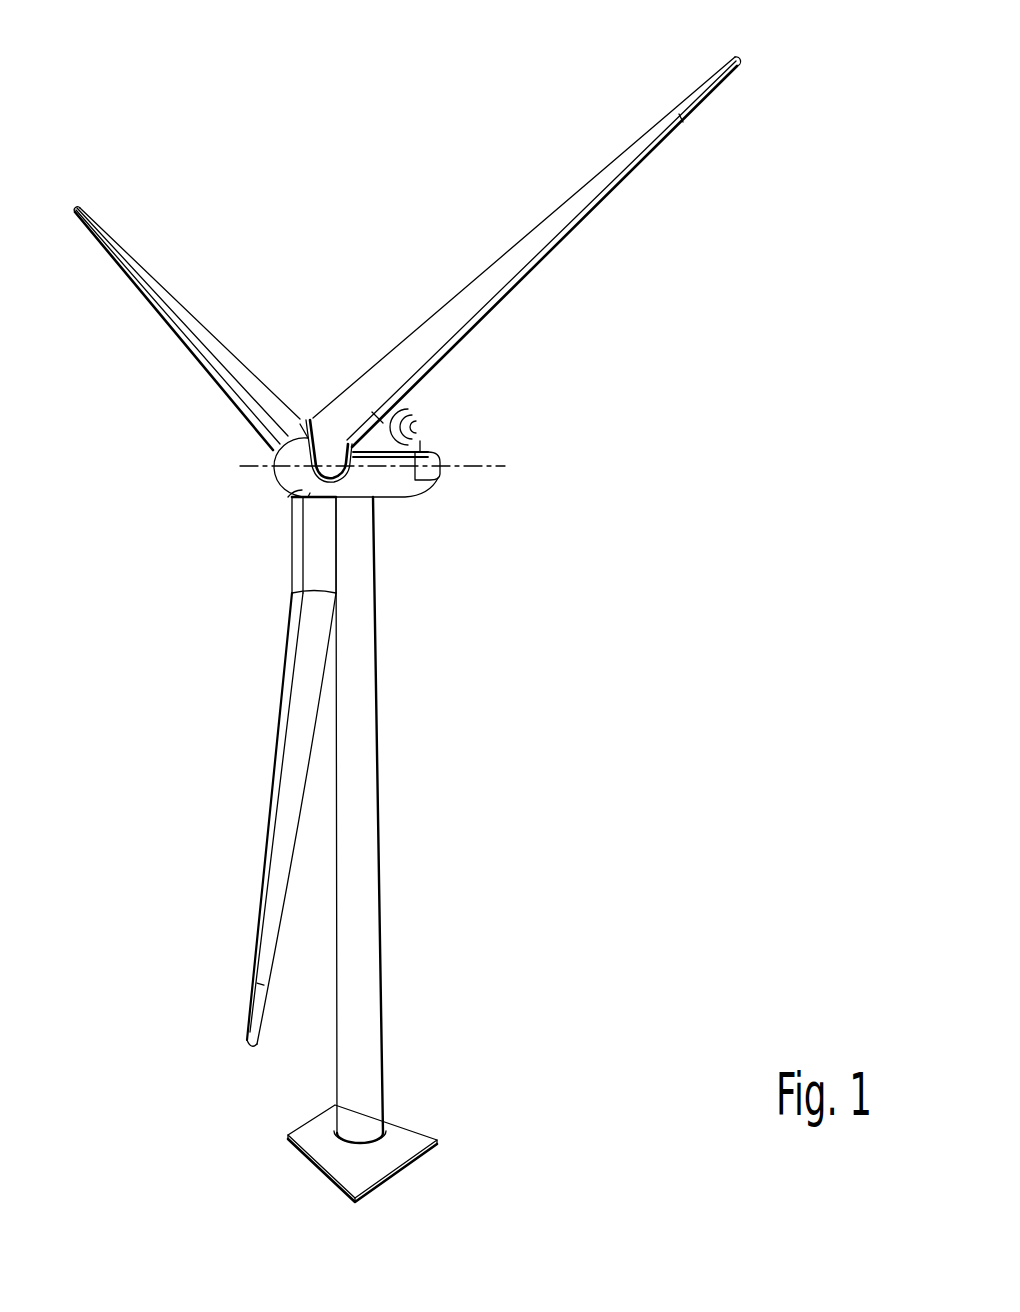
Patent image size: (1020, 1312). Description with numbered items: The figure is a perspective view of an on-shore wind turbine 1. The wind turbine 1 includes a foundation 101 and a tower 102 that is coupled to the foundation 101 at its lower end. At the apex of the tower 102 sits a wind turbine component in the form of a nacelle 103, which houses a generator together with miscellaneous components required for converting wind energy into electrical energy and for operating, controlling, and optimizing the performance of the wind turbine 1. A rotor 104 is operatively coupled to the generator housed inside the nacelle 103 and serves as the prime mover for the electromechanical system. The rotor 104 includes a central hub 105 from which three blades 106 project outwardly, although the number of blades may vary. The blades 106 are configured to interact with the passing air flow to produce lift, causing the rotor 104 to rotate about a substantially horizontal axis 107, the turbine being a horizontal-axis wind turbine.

The wind turbine 1 is at (178, 160).
The foundation 101 is at (410, 1128).
The tower 102 is at (362, 787).
The nacelle 103 is at (400, 483).
The rotor 104 is at (276, 481).
The central hub 105 is at (297, 433).
The blades 106 is at (180, 334).
The substantially horizontal axis 107 is at (458, 466).